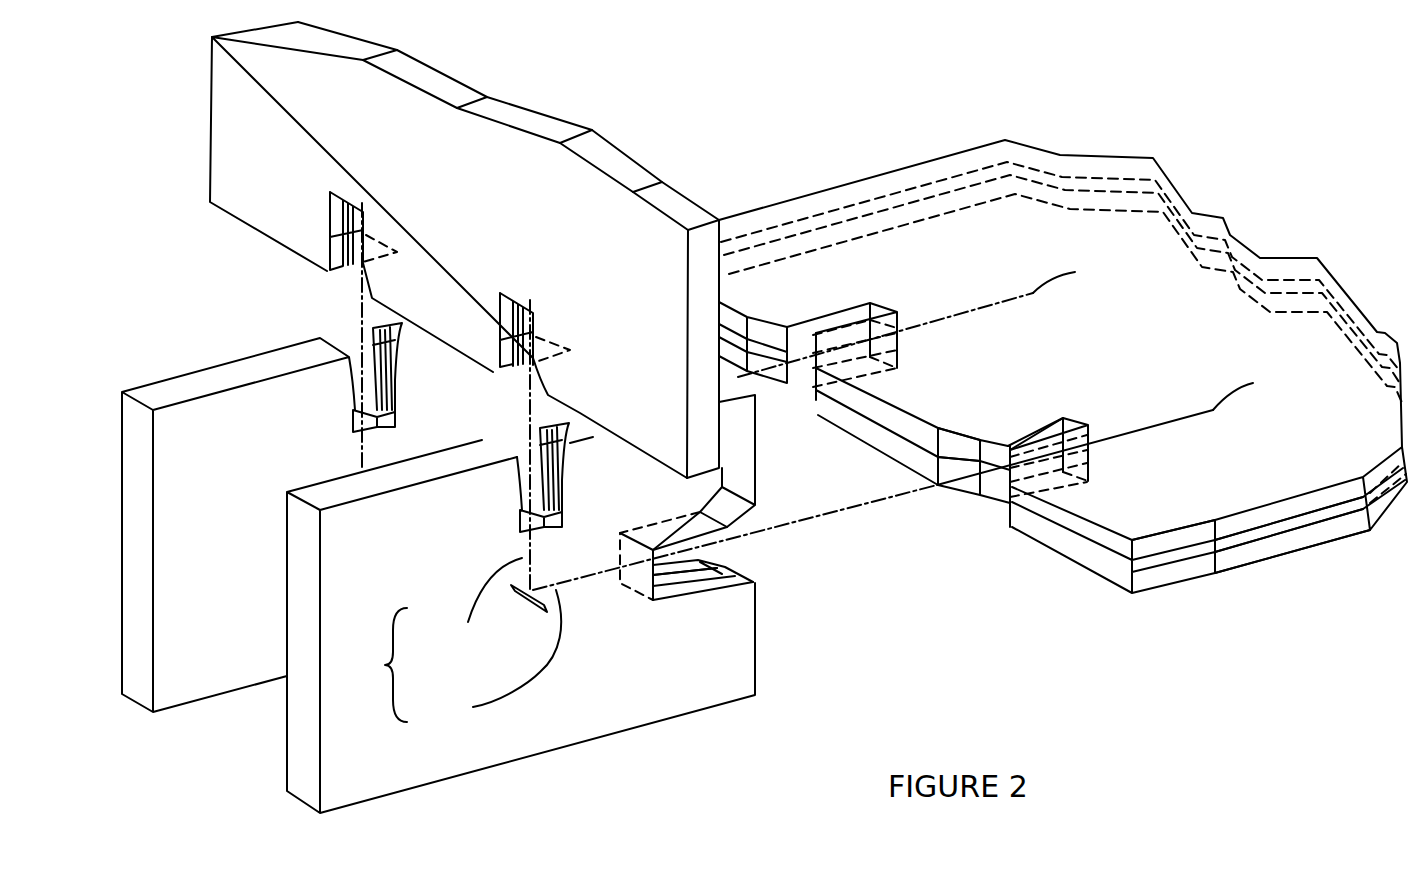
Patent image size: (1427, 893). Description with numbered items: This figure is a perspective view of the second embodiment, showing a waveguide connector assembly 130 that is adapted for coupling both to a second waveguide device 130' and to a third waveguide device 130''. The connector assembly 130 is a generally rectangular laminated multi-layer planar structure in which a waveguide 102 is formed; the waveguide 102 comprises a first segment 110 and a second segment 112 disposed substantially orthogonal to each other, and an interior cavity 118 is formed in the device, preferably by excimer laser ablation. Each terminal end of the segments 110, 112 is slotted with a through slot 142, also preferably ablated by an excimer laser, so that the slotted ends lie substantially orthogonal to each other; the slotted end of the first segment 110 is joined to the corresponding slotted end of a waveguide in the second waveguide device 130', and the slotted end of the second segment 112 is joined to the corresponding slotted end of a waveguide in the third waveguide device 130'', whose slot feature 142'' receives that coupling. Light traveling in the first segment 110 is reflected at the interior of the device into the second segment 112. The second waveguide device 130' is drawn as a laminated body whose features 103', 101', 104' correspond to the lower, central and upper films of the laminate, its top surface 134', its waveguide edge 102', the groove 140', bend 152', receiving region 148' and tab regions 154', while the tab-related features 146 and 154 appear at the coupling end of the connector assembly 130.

The waveguide connector assembly 130 is at (401, 582).
The second waveguide device 130' is at (1063, 301).
The third waveguide device 130'' is at (464, 243).
The through slot 142 is at (638, 469).
The tab of upper panel 142'' is at (411, 298).
The waveguide 102 is at (368, 665).
The first segment 110 is at (486, 653).
The second segment 112 is at (464, 605).
The interior cavity 118 is at (530, 590).
The tab slot 146 is at (682, 588).
The tab end 154 is at (667, 627).
The tab receiving region 154' is at (988, 393).
The groove 140' is at (1001, 408).
The edge of base 102' is at (1178, 336).
The bend 152' is at (983, 410).
The recess 148' is at (1065, 399).
The top surface 134' is at (1216, 494).
The upper layer 104' is at (1310, 541).
The middle layer 101' is at (1289, 563).
The lower layer 103' is at (1283, 588).